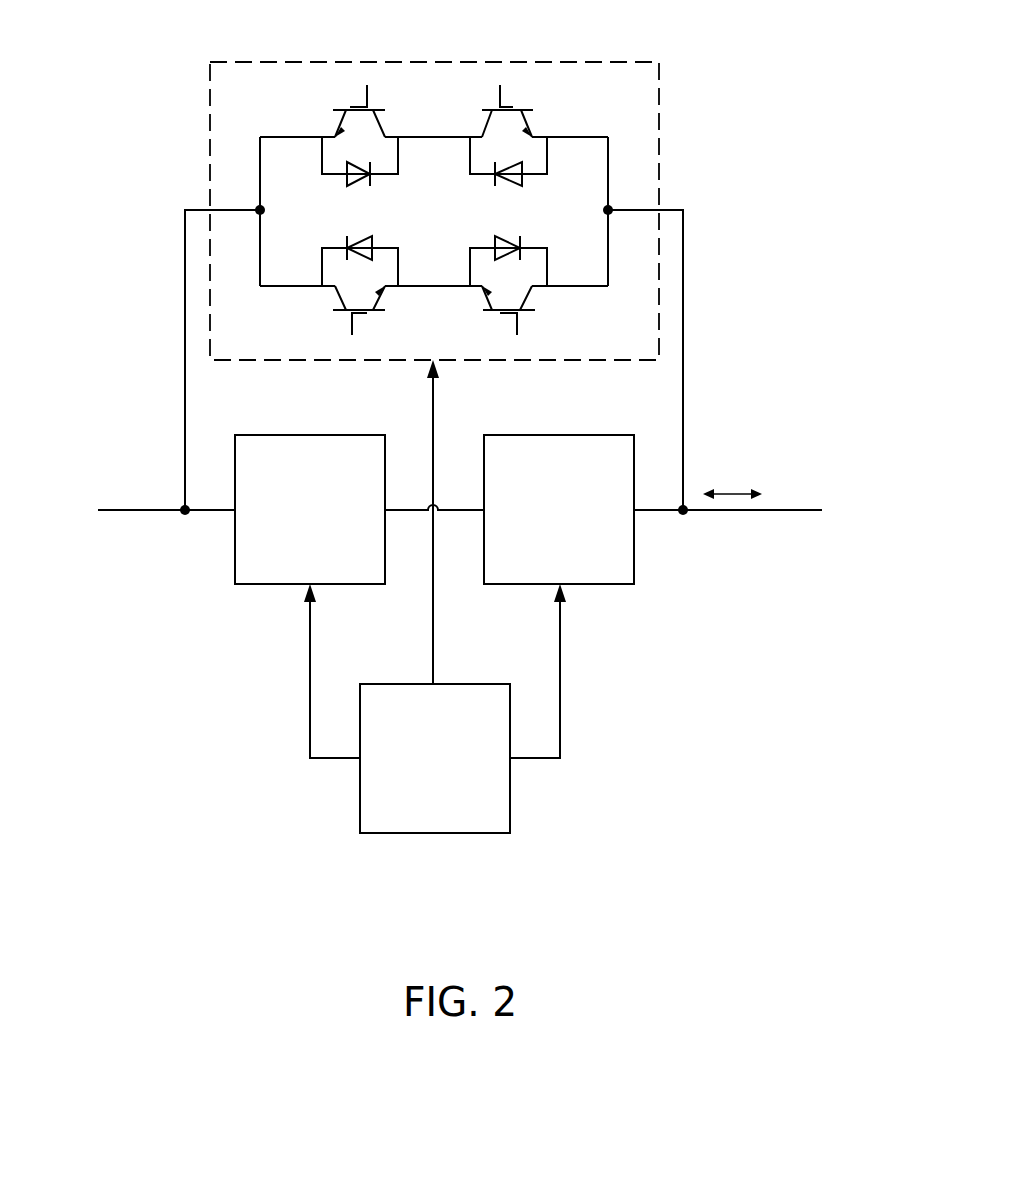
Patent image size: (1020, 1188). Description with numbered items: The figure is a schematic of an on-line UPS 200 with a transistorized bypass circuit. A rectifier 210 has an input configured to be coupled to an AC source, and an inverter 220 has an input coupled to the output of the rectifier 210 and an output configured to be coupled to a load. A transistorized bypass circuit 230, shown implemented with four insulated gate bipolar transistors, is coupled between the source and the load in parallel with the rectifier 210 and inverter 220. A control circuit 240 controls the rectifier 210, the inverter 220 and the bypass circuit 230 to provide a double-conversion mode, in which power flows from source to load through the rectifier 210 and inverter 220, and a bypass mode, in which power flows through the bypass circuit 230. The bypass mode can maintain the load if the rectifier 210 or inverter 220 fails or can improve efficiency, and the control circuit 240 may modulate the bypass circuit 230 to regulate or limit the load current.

The on-line UPS 200 is at (660, 822).
The rectifier 210 is at (310, 435).
The inverter 220 is at (560, 435).
The transistorized bypass circuit 230 is at (433, 62).
The control circuit 240 is at (434, 833).